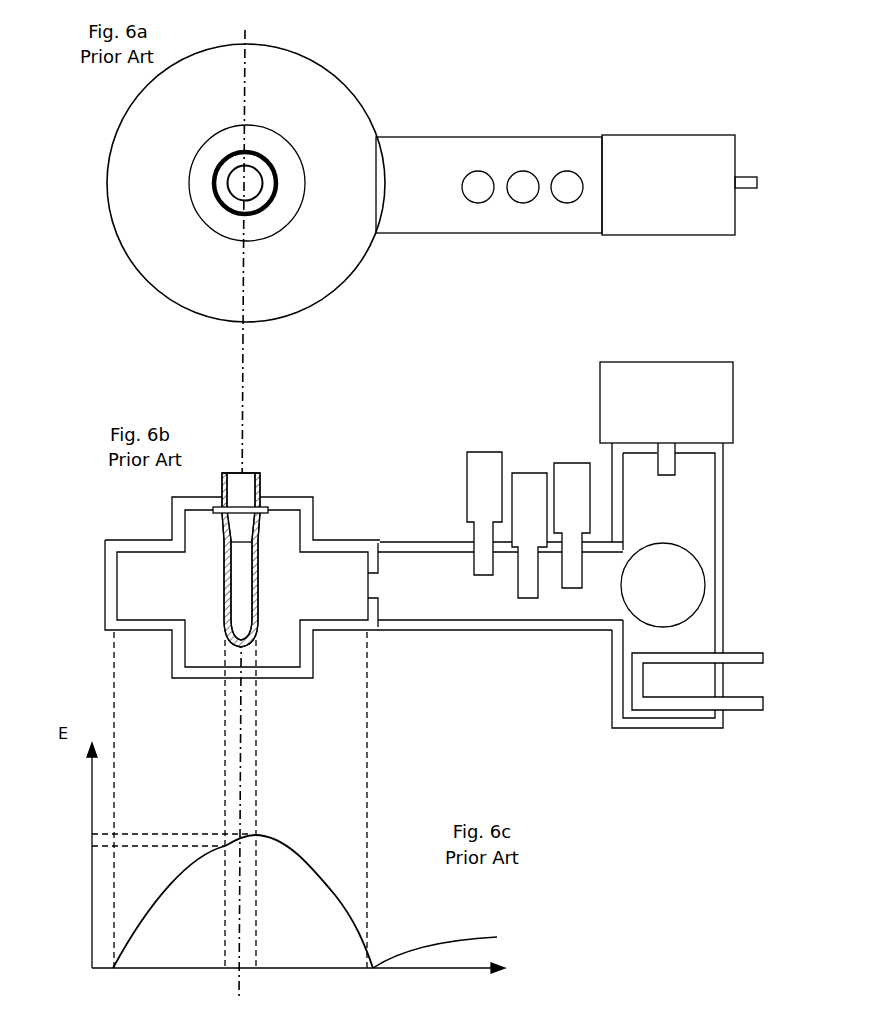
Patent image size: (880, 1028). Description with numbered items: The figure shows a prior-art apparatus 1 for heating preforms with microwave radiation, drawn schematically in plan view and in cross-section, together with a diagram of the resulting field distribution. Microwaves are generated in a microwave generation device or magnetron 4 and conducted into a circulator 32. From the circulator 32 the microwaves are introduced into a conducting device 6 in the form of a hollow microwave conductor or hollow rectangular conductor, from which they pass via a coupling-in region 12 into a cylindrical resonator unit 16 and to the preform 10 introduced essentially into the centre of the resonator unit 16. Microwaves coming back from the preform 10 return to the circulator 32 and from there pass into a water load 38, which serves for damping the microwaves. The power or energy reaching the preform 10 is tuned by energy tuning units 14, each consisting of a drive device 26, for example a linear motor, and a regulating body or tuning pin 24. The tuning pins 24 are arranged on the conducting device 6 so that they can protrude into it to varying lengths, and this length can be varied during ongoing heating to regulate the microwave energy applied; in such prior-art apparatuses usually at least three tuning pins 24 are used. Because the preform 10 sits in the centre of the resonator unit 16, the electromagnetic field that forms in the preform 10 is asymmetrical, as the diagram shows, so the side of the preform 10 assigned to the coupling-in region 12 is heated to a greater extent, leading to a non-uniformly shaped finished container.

In FIG. 6B, the apparatus 1 is at (396, 424).
In FIG. 6A, the magnetron 4 is at (627, 182).
In FIG. 6B, the magnetron 4 is at (642, 395).
In FIG. 6B, the conducting device 6 is at (485, 608).
In FIG. 6A, the preform 10 is at (217, 205).
In FIG. 6B, the preform 10 is at (267, 510).
In FIG. 6B, the coupling-in region 12 is at (378, 585).
In FIG. 6B, the energy tuning unit 14 is at (528, 515).
In FIG. 6B, the resonator unit 16 is at (112, 553).
In FIG. 6B, the tuning pin 24 is at (532, 592).
In FIG. 6A, the drive device 26 is at (478, 187).
In FIG. 6B, the drive device 26 is at (487, 467).
In FIG. 6B, the circulator 32 is at (675, 583).
In FIG. 6B, the water load 38 is at (730, 658).